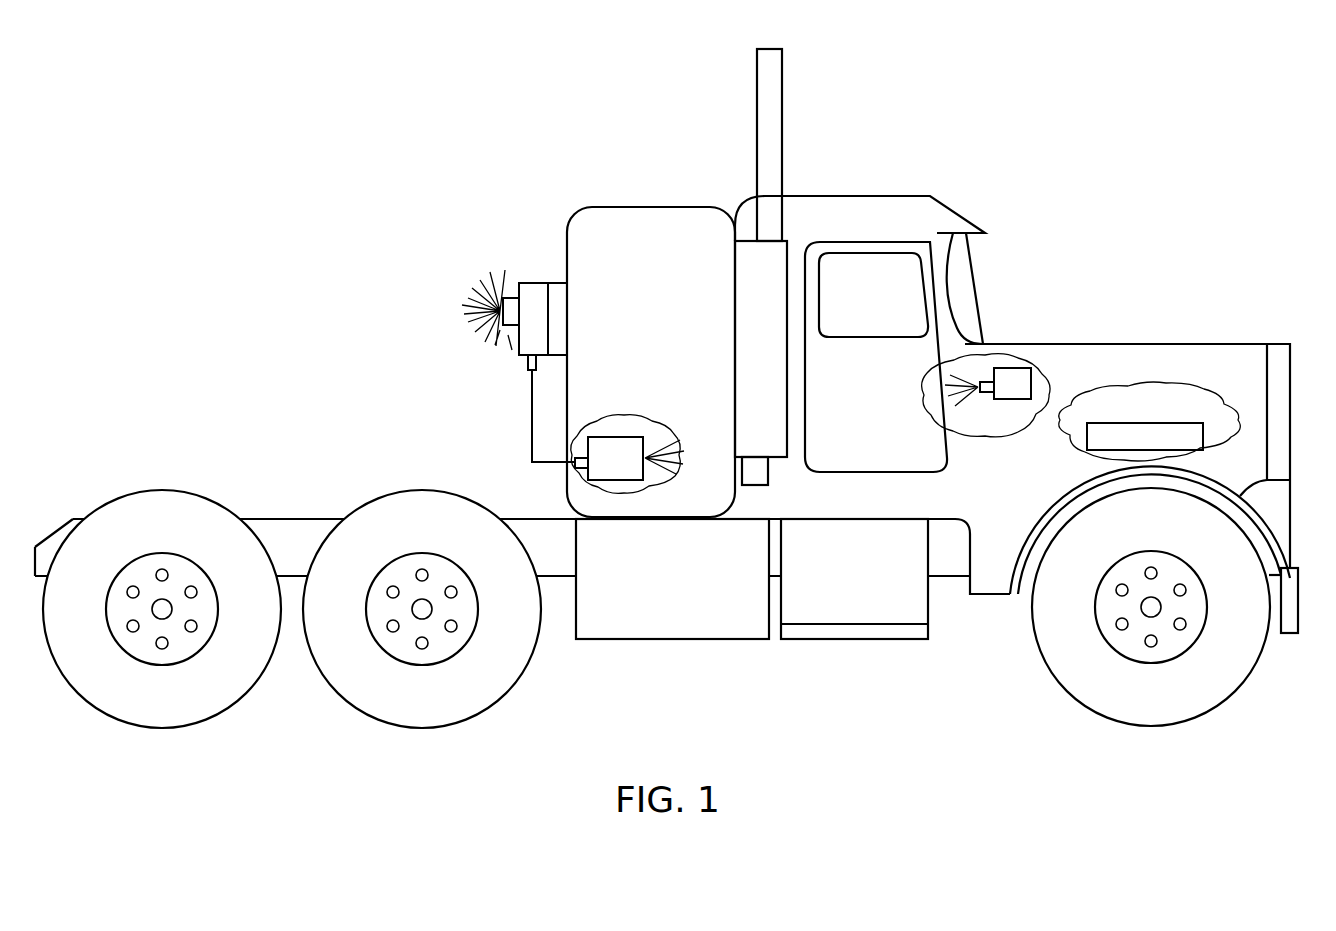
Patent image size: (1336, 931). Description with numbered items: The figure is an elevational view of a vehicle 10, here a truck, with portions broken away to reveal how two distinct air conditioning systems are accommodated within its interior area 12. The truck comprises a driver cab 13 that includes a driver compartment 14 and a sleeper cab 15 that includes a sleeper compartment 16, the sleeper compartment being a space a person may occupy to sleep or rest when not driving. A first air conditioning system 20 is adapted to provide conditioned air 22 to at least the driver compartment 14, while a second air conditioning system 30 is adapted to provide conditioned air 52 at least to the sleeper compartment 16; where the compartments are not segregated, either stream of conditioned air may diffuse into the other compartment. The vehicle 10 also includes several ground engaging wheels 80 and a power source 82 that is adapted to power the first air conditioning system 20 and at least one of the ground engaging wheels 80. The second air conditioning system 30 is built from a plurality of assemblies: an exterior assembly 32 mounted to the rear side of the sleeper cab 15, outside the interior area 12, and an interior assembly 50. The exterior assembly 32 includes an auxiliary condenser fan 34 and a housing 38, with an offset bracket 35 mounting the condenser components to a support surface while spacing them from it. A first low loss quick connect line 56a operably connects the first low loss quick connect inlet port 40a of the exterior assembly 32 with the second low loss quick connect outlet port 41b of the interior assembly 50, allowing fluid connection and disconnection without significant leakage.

The vehicle 10 is at (1208, 152).
The interior area 12 is at (912, 300).
The driver cab 13 is at (863, 182).
The driver compartment 14 is at (980, 415).
The sleeper cab 15 is at (680, 193).
The sleeper compartment 16 is at (646, 462).
The first air conditioning system 20 is at (1031, 380).
The conditioned air 22 is at (963, 433).
The second air conditioning system 30 is at (390, 292).
The exterior assembly 32 is at (535, 258).
The auxiliary condenser fan 34 is at (510, 285).
The offset bracket 35 is at (562, 307).
The housing 38 is at (540, 283).
The first low loss quick connect inlet port 40a is at (525, 362).
The second low loss quick connect outlet port 41b is at (573, 465).
The interior assembly 50 is at (627, 483).
The conditioned air 52 is at (678, 440).
The first low loss quick connect line 56a is at (530, 422).
The ground engaging wheel 80 is at (1242, 685).
The power source 82 is at (1180, 422).